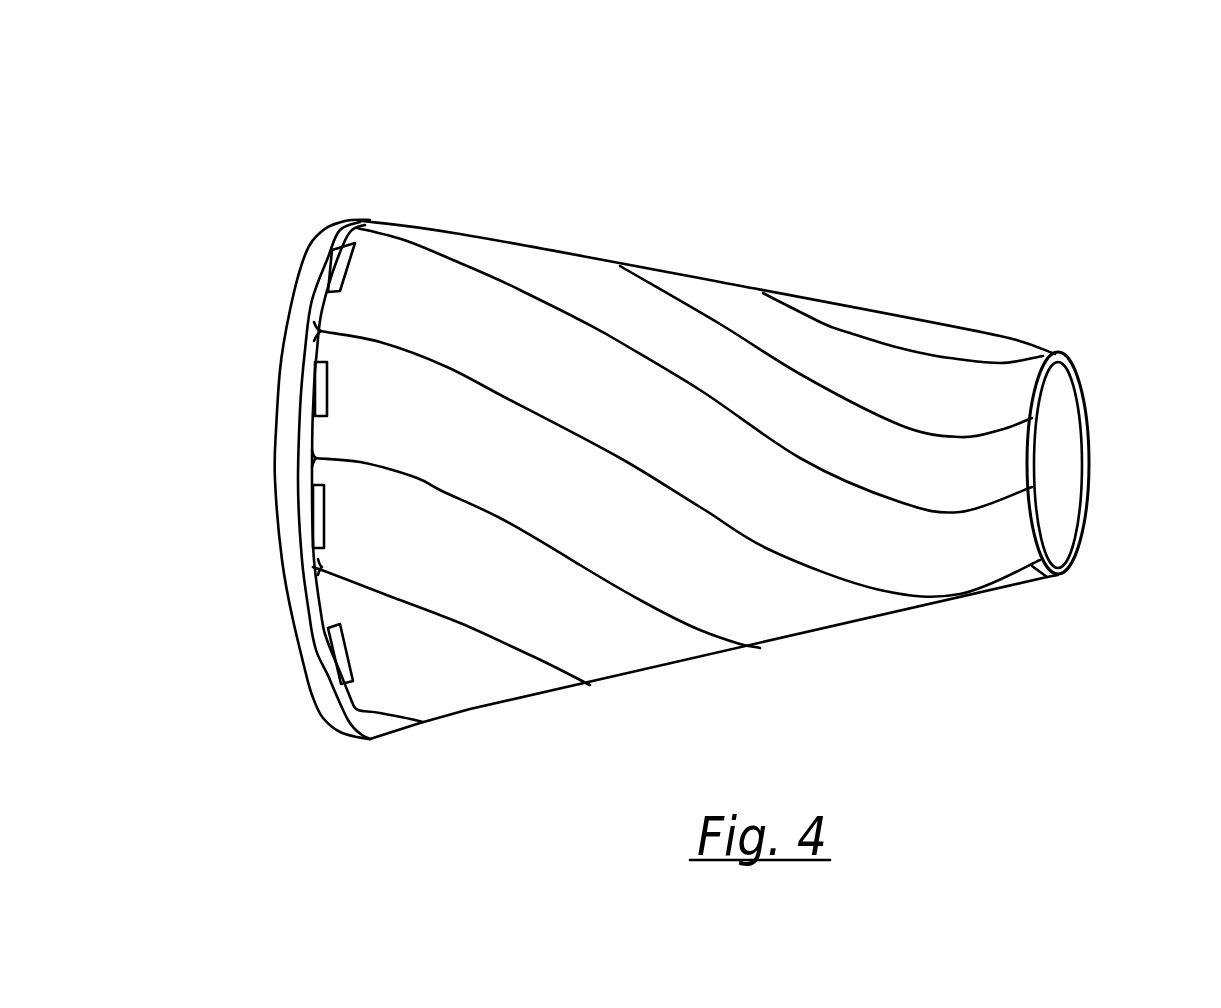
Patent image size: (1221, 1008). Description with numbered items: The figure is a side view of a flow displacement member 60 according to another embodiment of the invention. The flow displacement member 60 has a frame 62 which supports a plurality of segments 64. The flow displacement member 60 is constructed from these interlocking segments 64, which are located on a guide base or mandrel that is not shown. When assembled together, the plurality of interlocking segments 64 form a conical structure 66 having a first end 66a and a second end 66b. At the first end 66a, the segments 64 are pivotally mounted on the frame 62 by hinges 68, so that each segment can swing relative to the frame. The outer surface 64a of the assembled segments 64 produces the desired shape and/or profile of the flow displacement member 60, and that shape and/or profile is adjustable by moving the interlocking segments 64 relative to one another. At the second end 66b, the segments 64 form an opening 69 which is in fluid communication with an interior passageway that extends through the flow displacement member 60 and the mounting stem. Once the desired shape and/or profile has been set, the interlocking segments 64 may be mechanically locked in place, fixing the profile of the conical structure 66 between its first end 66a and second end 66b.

The flow displacement member 60 is at (325, 142).
The frame 62 is at (307, 658).
The segments 64 is at (558, 265).
The outer surface 64a is at (880, 363).
The conical structure 66 is at (793, 293).
The first end 66a is at (370, 740).
The second end 66b is at (1053, 578).
The hinges 68 is at (337, 270).
The opening 69 is at (1068, 407).